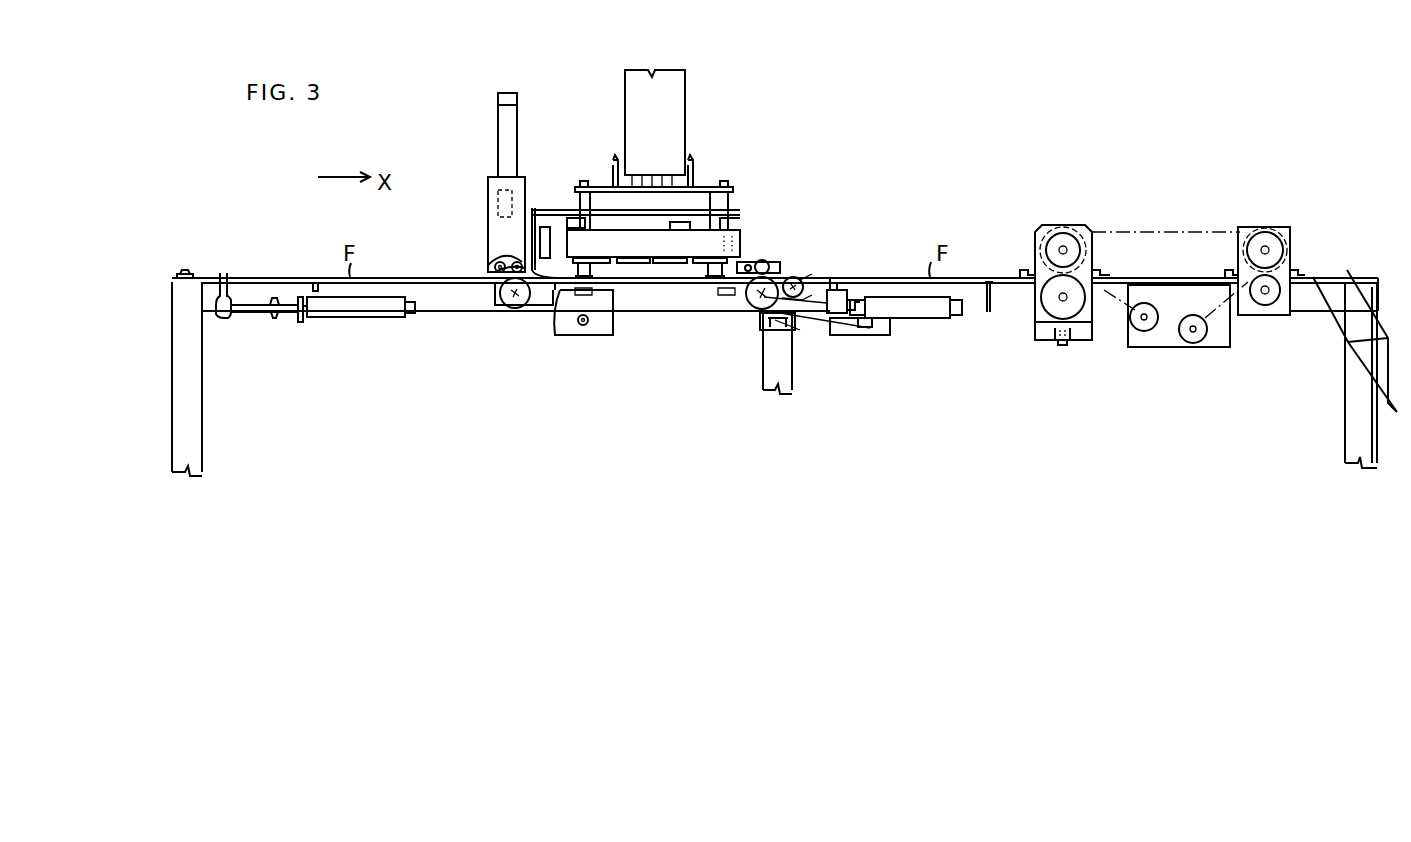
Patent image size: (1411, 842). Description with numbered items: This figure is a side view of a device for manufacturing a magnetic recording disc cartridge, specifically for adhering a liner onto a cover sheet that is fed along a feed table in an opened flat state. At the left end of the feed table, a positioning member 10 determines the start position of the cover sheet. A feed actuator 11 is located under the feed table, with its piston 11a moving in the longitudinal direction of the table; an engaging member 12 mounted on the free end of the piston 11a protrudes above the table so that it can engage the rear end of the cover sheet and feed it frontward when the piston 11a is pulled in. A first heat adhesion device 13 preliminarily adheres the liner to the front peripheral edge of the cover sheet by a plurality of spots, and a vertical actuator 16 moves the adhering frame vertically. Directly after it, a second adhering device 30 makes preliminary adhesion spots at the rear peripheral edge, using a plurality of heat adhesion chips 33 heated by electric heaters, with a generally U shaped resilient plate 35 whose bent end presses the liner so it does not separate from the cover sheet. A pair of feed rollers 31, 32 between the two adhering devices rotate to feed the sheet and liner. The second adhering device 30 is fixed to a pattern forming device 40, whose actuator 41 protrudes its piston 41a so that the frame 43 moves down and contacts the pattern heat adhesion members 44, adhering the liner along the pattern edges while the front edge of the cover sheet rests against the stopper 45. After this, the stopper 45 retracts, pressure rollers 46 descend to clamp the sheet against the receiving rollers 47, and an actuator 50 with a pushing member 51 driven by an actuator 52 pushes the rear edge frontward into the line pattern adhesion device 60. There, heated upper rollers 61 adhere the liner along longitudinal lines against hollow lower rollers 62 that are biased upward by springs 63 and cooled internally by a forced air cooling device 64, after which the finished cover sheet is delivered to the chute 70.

The positioning member 10 is at (205, 274).
The feed actuator 11 is at (350, 318).
The piston 11a is at (258, 318).
The engaging member 12 is at (210, 300).
The first heat adhesion device 13 is at (488, 200).
The vertical actuator 16 is at (503, 118).
The second adhering device 30 is at (520, 233).
The feed roller 31 is at (515, 311).
The feed roller 32 is at (490, 303).
The heat adhesion chips 33 is at (567, 320).
The U shaped resilient plate 35 is at (520, 254).
The pattern forming device 40 is at (664, 131).
The actuator 41 is at (668, 128).
The piston 41a is at (662, 174).
The frame 43 is at (740, 238).
The pattern heat adhesion members 44 is at (626, 268).
The stopper 45 is at (790, 276).
The pressure rollers 46 is at (767, 260).
The receiving rollers 47 is at (753, 303).
The actuator 50 is at (910, 313).
The pushing member 51 is at (830, 290).
The actuator 52 is at (880, 312).
The line pattern adhesion device 60 is at (1143, 293).
The upper rollers 61 is at (1068, 237).
The lower rollers 62 is at (1081, 316).
The springs 63 is at (1053, 329).
The forced air cooling device 64 is at (1035, 313).
The chute 70 is at (1355, 326).